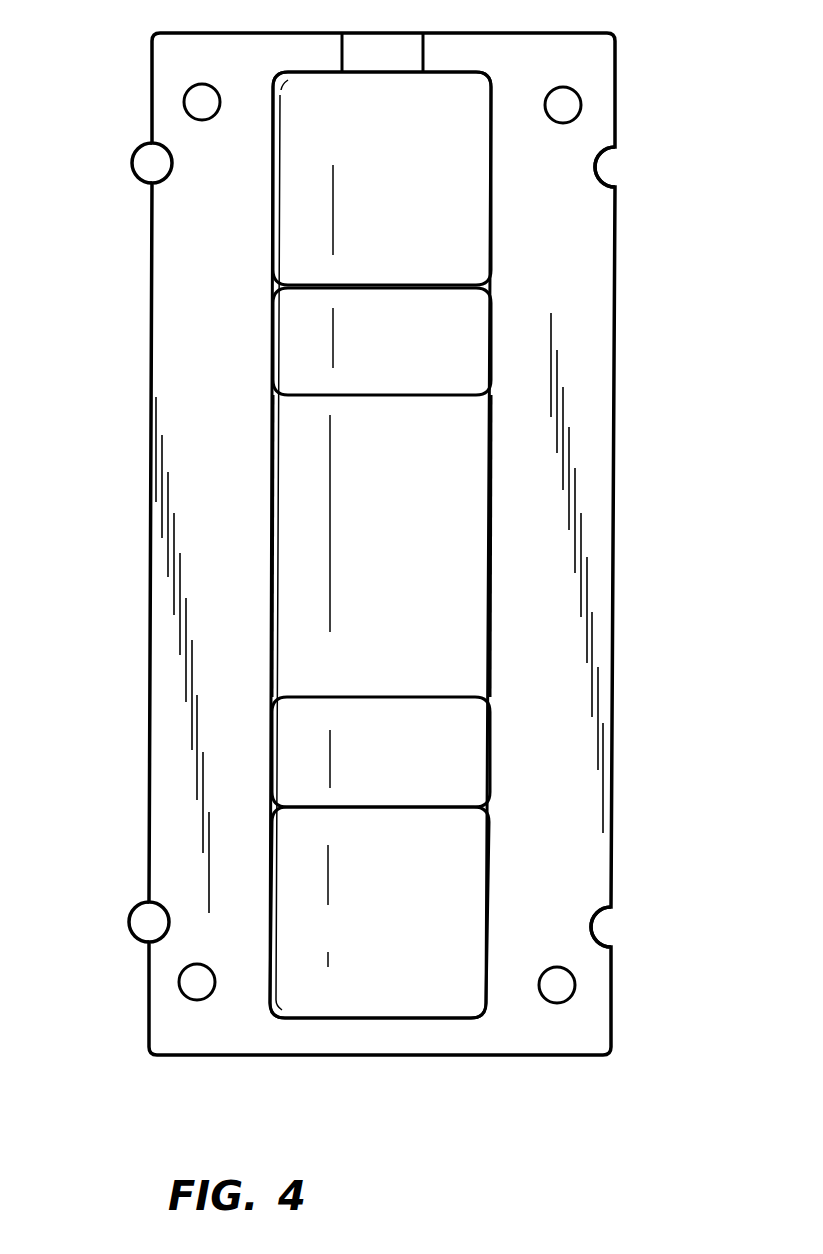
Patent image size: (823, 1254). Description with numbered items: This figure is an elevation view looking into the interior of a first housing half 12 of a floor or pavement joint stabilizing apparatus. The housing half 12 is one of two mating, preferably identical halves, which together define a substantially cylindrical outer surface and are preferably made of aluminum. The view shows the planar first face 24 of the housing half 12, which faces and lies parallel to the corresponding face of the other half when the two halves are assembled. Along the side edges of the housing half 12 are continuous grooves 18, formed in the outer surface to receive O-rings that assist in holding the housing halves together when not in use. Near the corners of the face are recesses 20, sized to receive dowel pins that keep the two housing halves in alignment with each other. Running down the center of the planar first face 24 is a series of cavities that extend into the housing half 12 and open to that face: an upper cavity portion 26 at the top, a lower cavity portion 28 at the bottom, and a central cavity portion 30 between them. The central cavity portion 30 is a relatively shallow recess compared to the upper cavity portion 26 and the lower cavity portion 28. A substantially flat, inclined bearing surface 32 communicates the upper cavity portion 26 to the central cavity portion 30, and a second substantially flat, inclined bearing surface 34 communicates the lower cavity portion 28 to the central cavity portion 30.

The first housing half 12 is at (616, 538).
The continuous groove 18 is at (152, 163).
The recess 20 is at (198, 98).
The planar first face 24 is at (598, 587).
The upper cavity portion 26 is at (423, 221).
The lower cavity portion 28 is at (419, 905).
The central cavity portion 30 is at (423, 525).
The inclined bearing surface 32 is at (423, 358).
The inclined bearing surface 34 is at (419, 765).